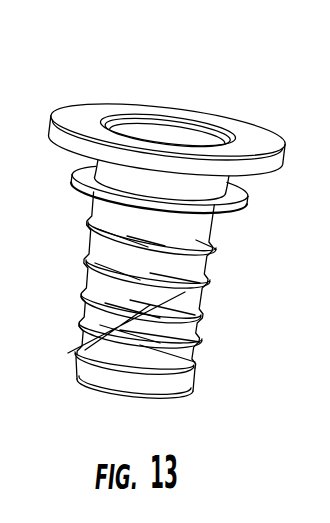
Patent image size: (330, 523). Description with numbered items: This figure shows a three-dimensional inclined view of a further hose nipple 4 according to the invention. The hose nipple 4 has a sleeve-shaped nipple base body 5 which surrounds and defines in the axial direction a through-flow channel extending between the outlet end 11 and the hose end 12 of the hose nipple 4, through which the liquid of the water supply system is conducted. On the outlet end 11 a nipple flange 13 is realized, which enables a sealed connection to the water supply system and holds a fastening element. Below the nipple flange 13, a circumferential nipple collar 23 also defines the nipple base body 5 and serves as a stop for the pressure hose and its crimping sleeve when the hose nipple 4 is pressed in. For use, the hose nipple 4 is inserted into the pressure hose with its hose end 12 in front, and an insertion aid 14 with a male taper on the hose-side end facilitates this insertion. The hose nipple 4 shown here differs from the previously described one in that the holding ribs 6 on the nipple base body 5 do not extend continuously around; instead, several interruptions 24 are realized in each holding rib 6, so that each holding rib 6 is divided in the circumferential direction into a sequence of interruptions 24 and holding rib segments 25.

The hose nipple 4 is at (247, 281).
The nipple base body 5 is at (184, 330).
The holding rib 6 is at (72, 219).
The outlet end 11 is at (158, 130).
The hose end 12 is at (134, 404).
The nipple flange 13 is at (87, 110).
The insertion aid 14 is at (168, 383).
The nipple collar 23 is at (249, 203).
The interruption 24 is at (88, 262).
The holding rib segment 25 is at (163, 243).